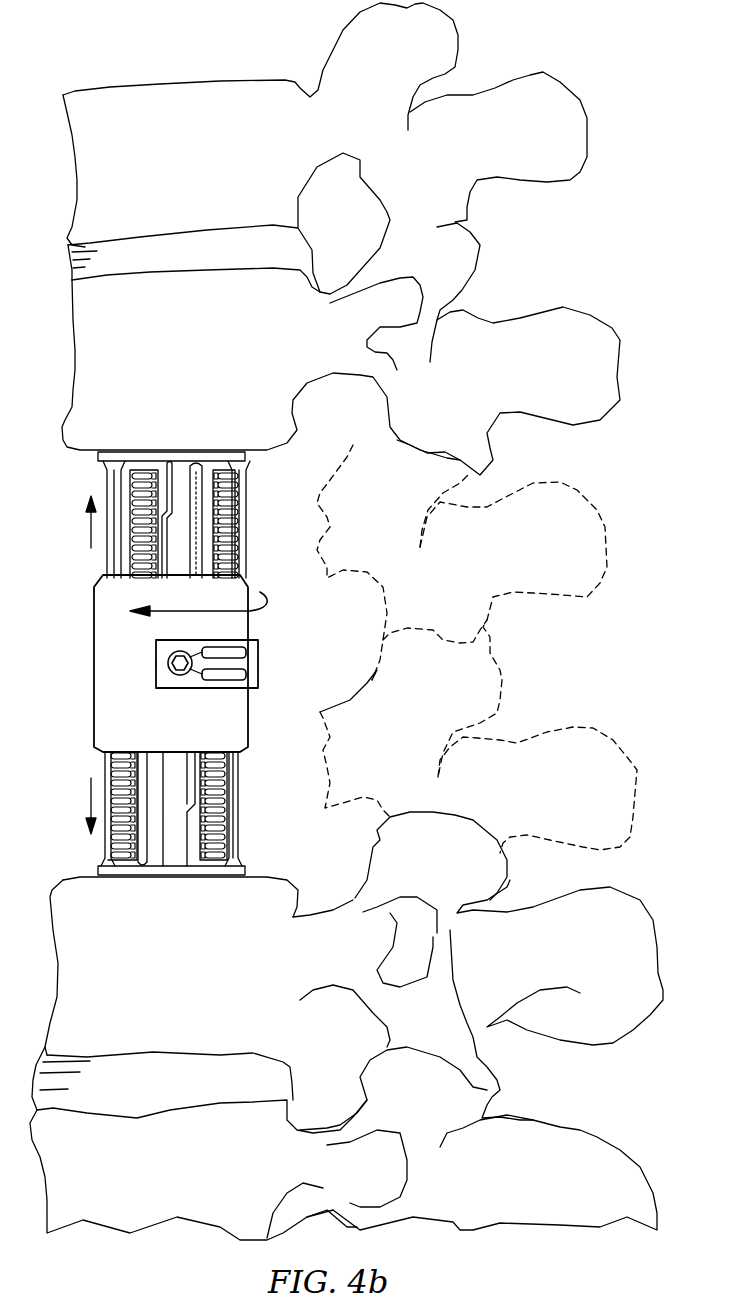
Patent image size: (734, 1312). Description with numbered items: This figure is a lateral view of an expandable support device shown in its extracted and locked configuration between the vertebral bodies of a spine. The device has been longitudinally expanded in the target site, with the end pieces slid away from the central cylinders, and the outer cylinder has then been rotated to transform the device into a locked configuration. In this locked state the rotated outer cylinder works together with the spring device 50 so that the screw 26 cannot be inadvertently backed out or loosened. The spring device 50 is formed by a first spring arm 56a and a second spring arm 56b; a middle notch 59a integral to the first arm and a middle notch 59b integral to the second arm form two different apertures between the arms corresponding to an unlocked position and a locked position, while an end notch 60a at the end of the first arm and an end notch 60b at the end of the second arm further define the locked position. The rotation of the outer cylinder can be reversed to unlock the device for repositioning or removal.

The spring device 50 is at (147, 680).
The screw 26 is at (166, 664).
The first spring arm 56a is at (222, 640).
The second spring arm 56b is at (223, 688).
The middle notch 59a is at (245, 655).
The middle notch 59b is at (245, 673).
The end notch 60a is at (157, 650).
The end notch 60b is at (160, 684).